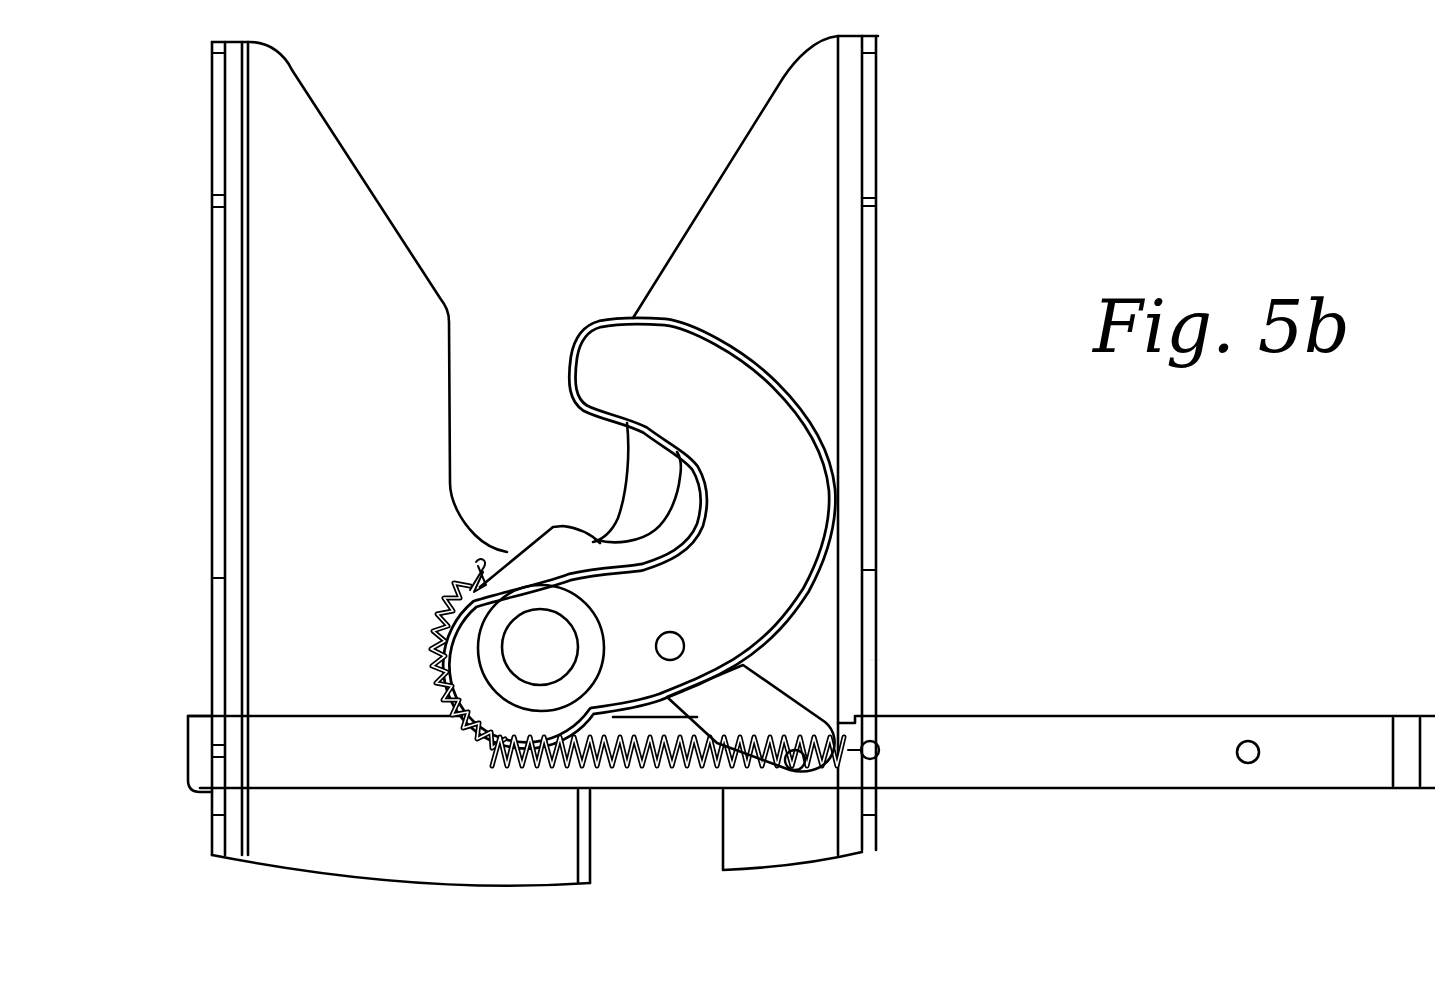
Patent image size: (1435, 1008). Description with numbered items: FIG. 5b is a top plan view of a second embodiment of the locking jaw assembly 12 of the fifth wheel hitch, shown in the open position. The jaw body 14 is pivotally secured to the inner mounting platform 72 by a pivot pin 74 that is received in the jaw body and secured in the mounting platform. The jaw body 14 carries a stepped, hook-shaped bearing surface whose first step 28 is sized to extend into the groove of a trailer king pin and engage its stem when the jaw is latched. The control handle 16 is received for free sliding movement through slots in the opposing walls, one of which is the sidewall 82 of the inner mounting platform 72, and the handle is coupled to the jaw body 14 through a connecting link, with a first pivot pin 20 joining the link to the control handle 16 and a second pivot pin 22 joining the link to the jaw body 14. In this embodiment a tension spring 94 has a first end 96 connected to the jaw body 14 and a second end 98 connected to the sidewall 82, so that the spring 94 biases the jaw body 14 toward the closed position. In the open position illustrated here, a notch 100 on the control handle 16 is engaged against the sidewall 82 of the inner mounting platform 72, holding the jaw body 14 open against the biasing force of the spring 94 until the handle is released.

The locking jaw assembly 12 is at (523, 276).
The mounting platform 72 is at (268, 398).
The jaw body 14 is at (810, 514).
The first step 28 is at (673, 507).
The first end 96 is at (492, 562).
The second pivot pin 22 is at (672, 640).
The pivot pin 74 is at (540, 647).
The sidewall 82 is at (866, 622).
The notch 100 is at (923, 675).
The second end 98 is at (882, 756).
The tension spring 94 is at (557, 745).
The first pivot pin 20 is at (800, 773).
The control handle 16 is at (937, 770).